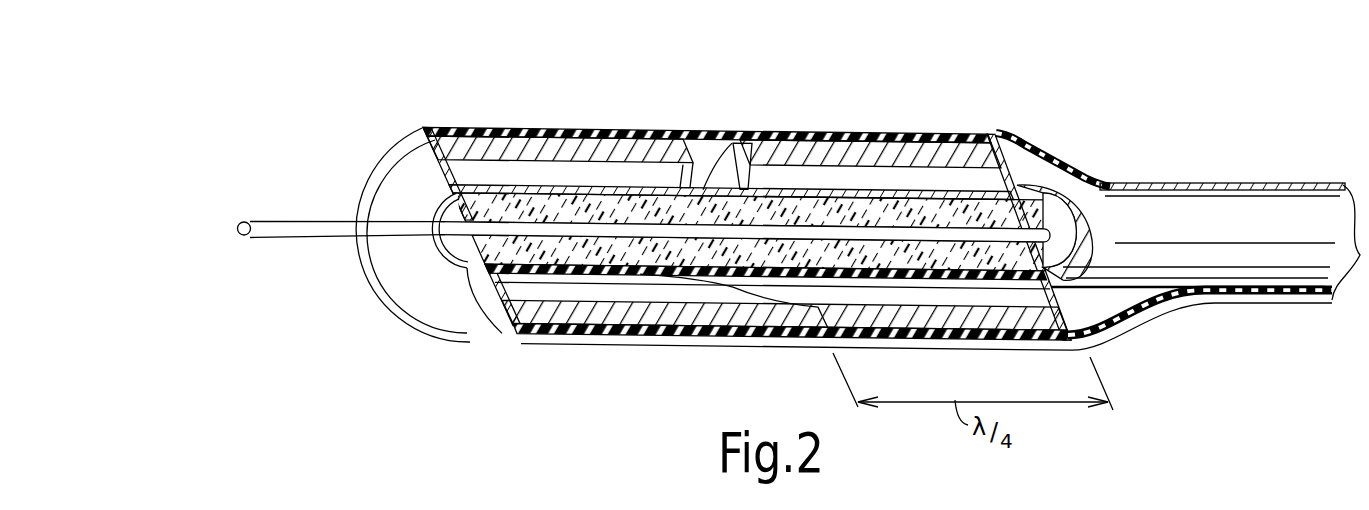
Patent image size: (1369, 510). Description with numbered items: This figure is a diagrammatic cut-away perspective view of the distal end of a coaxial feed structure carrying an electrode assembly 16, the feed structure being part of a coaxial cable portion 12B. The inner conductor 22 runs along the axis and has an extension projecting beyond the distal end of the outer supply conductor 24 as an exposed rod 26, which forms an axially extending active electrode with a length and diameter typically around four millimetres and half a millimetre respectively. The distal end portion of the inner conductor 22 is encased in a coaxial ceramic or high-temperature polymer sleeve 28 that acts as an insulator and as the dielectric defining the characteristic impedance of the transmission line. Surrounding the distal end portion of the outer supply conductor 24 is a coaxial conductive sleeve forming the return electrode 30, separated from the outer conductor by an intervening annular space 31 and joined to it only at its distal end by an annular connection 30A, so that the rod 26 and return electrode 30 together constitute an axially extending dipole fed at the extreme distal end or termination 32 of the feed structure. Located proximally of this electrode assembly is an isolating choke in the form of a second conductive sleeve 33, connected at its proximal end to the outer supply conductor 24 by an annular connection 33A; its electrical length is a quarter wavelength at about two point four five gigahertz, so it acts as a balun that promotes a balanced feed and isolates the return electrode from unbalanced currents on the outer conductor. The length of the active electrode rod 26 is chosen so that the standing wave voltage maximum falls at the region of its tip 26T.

The antenna assembly 16 is at (580, 106).
The return electrode 30 is at (646, 130).
The annular connection 30A is at (455, 195).
The annular space 31 is at (500, 173).
The second conductive sleeve 33 is at (853, 142).
The annular connection 33A is at (1020, 143).
The sleeve 28 is at (800, 253).
The outer supply conductor 24 is at (1167, 213).
The coaxial cable distal portion 12B is at (1308, 182).
The termination 32 is at (470, 270).
The inner conductor 22 is at (1072, 196).
The exposed rod 26 is at (316, 234).
The tip 26T is at (238, 233).